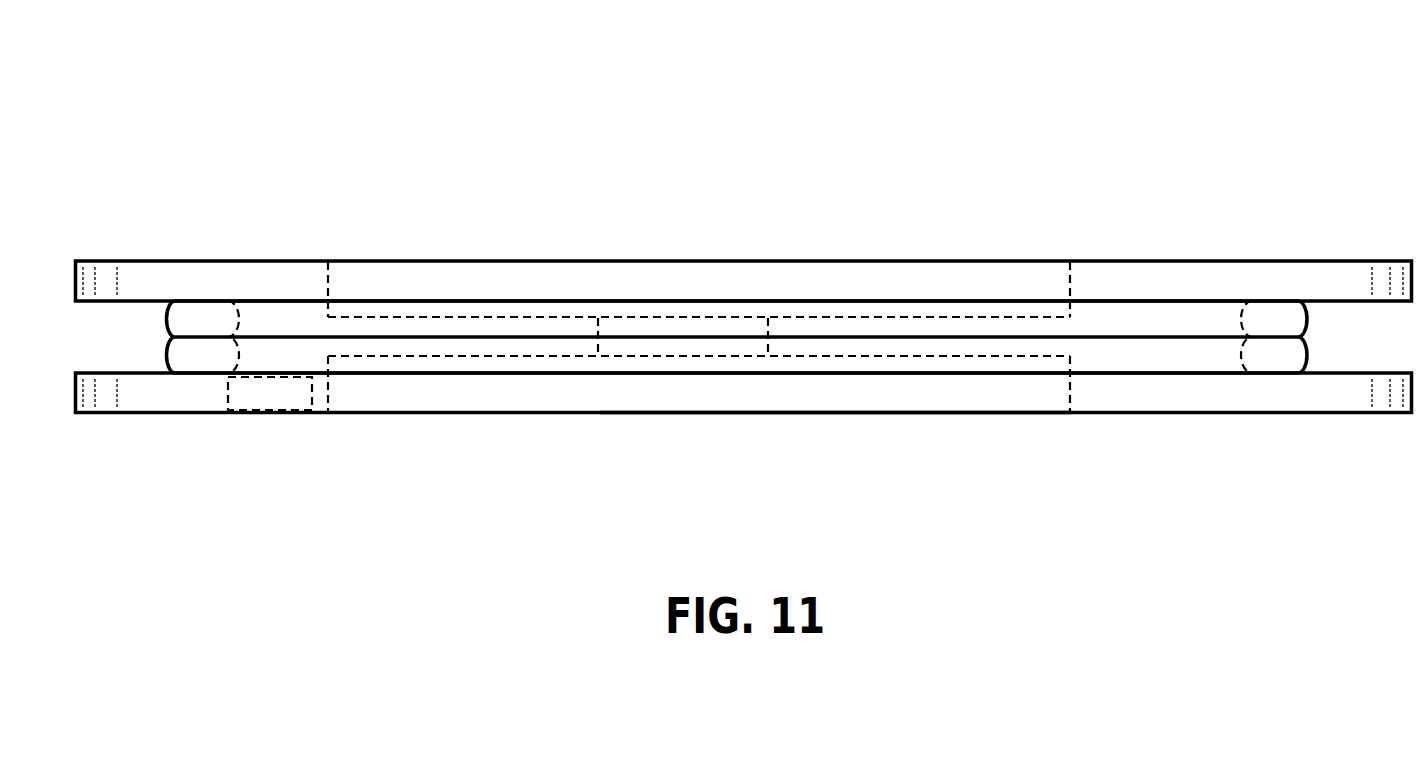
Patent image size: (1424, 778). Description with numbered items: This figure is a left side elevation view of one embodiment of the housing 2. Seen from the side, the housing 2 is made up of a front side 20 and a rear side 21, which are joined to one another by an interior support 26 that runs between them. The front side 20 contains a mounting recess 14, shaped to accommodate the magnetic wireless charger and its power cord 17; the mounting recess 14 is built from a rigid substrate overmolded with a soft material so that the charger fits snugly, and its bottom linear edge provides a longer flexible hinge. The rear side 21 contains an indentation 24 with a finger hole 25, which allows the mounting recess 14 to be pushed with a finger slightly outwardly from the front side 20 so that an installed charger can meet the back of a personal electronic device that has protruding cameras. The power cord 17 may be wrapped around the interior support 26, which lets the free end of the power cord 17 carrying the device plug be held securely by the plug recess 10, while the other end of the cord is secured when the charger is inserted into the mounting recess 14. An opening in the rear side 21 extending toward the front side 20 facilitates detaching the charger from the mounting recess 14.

The housing 2 is at (1237, 148).
The plug recess 10 is at (255, 397).
The mounting recess 14 is at (1072, 283).
The power cord 17 is at (1305, 372).
The front side 20 is at (165, 278).
The rear side 21 is at (145, 413).
The indentation 24 is at (925, 398).
The finger hole 25 is at (613, 325).
The interior support 26 is at (1125, 360).